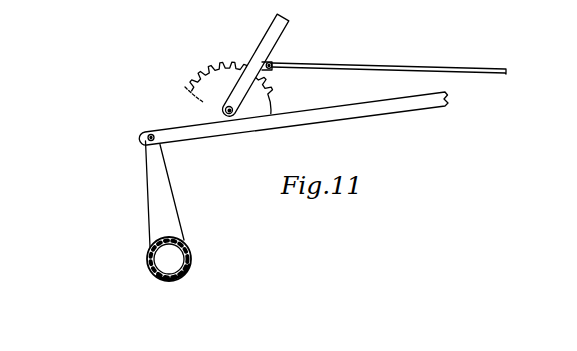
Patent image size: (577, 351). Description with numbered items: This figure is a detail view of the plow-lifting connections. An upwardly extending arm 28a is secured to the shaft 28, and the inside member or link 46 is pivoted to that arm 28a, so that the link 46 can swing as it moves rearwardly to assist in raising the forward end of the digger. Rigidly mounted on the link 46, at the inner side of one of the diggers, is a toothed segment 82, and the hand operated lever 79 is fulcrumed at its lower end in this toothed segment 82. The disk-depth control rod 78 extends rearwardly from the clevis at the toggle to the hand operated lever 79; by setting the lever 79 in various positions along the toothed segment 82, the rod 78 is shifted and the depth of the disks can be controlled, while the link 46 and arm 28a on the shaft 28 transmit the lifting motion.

The shaft 28 is at (185, 246).
The upwardly extending arm 28a is at (161, 189).
The inside member 46 is at (333, 113).
The disk-depth control rod 78 is at (371, 61).
The hand operated lever 79 is at (286, 28).
The toothed segment 82 is at (184, 117).